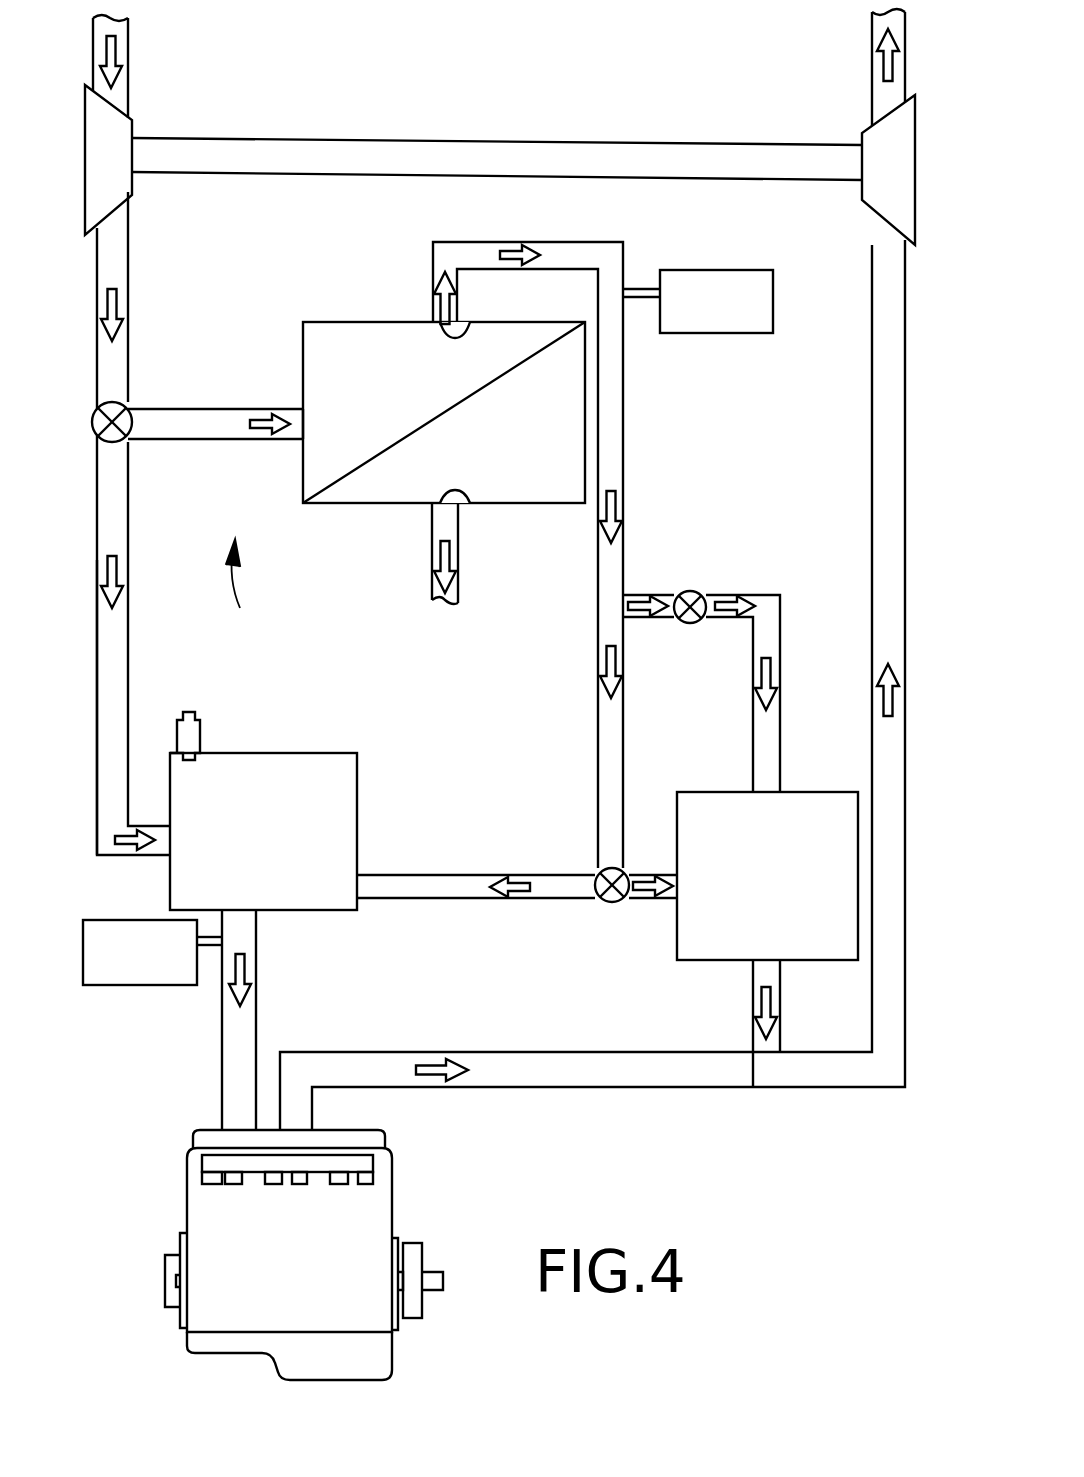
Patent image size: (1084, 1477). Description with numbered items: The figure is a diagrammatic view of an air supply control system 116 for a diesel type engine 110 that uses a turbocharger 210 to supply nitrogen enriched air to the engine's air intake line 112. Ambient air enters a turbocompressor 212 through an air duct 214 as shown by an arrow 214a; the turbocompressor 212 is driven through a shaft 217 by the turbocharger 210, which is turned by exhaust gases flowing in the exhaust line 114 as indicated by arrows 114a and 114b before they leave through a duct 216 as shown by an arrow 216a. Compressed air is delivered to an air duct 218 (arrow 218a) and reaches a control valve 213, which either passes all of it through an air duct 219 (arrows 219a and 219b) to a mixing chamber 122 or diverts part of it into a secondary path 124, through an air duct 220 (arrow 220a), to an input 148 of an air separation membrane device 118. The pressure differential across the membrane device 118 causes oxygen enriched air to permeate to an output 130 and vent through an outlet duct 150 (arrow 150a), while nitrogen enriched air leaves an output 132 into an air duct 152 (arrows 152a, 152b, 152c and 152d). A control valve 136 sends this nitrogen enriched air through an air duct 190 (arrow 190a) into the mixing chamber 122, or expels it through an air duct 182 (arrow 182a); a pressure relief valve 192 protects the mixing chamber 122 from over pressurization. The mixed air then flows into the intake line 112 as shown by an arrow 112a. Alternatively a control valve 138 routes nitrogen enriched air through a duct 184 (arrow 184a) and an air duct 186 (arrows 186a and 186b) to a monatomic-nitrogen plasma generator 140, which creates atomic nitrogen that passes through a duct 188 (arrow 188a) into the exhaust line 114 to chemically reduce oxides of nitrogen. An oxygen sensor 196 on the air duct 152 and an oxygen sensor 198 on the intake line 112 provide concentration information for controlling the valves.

The engine 110 is at (207, 1355).
The air intake line 112 is at (222, 1052).
The arrow 112a is at (248, 965).
The exhaust line 114 is at (507, 1087).
The arrow 114a is at (440, 1062).
The arrow 114b is at (875, 690).
The air supply control system 116 is at (272, 329).
The air separation membrane device 118 is at (372, 322).
The mixing chamber 122 is at (355, 753).
The secondary path 124 is at (252, 592).
The output 130 is at (470, 508).
The output 132 is at (462, 330).
The control valve 136 is at (622, 870).
The control valve 138 is at (686, 591).
The monatomic-nitrogen plasma generator 140 is at (692, 792).
The input 148 is at (340, 440).
The outlet duct 150 is at (458, 530).
The arrow 150a is at (455, 562).
The air duct 152 is at (470, 242).
The arrow 152a is at (438, 282).
The arrow 152b is at (530, 242).
The arrow 152c is at (612, 495).
The arrow 152d is at (600, 660).
The air duct 182 is at (640, 875).
The arrow 182a is at (655, 898).
The duct 184 is at (642, 595).
The arrow 184a is at (665, 620).
The air duct 186 is at (730, 595).
The arrow 186a is at (745, 620).
The arrow 186b is at (812, 665).
The duct 188 is at (755, 970).
The arrow 188a is at (755, 1012).
The air duct 190 is at (530, 878).
The arrow 190a is at (510, 898).
The pressure relief valve 192 is at (200, 715).
The oxygen sensor 196 is at (740, 333).
The oxygen sensor 198 is at (98, 985).
The turbocharger 210 is at (862, 133).
The turbocompressor 212 is at (130, 117).
The control valve 213 is at (126, 408).
The air duct 214 is at (128, 76).
The arrow 214a is at (122, 62).
The duct 216 is at (872, 30).
The arrow 216a is at (880, 48).
The shaft 217 is at (572, 150).
The air duct 218 is at (128, 255).
The arrow 218a is at (122, 302).
The air duct 219 is at (168, 660).
The arrow 219a is at (122, 578).
The arrow 219b is at (132, 832).
The air duct 220 is at (215, 439).
The arrow 220a is at (270, 412).